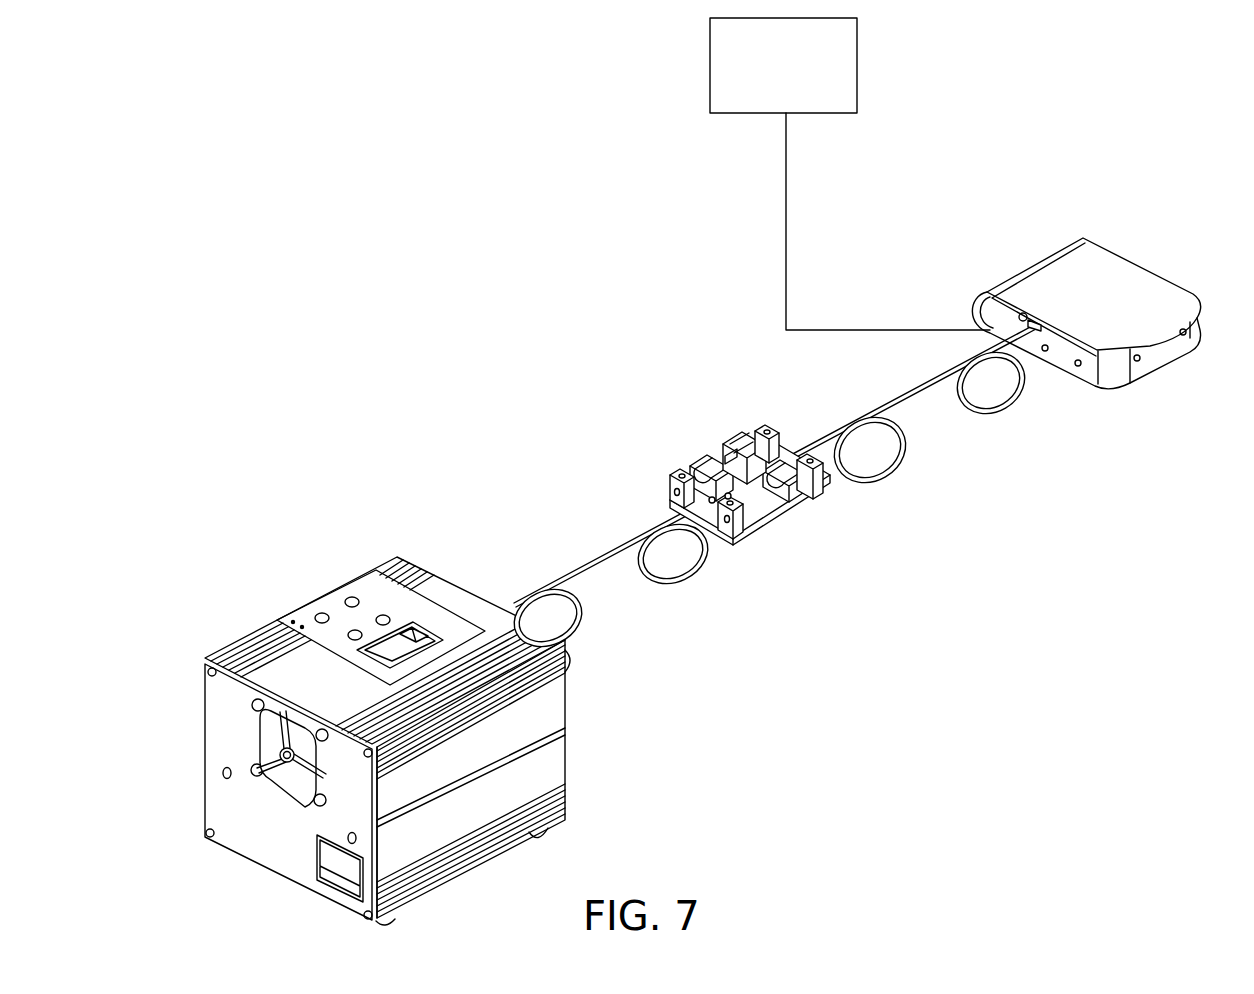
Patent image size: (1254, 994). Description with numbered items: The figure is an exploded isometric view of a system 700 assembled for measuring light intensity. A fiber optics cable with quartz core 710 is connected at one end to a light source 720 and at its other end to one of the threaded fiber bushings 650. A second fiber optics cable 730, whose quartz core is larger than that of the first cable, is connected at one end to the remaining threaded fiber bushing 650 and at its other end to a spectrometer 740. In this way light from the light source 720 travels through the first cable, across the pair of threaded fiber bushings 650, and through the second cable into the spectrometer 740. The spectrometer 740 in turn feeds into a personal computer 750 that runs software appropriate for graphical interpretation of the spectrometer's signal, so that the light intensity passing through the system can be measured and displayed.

The system 700 is at (254, 216).
The fiber optics cable with quartz core 710 is at (615, 558).
The light source 720 is at (362, 595).
The second fiber optics cable 730 is at (918, 390).
The spectrometer 740 is at (1150, 325).
The personal computer 750 is at (803, 71).
The threaded fiber bushing 650 is at (733, 442).